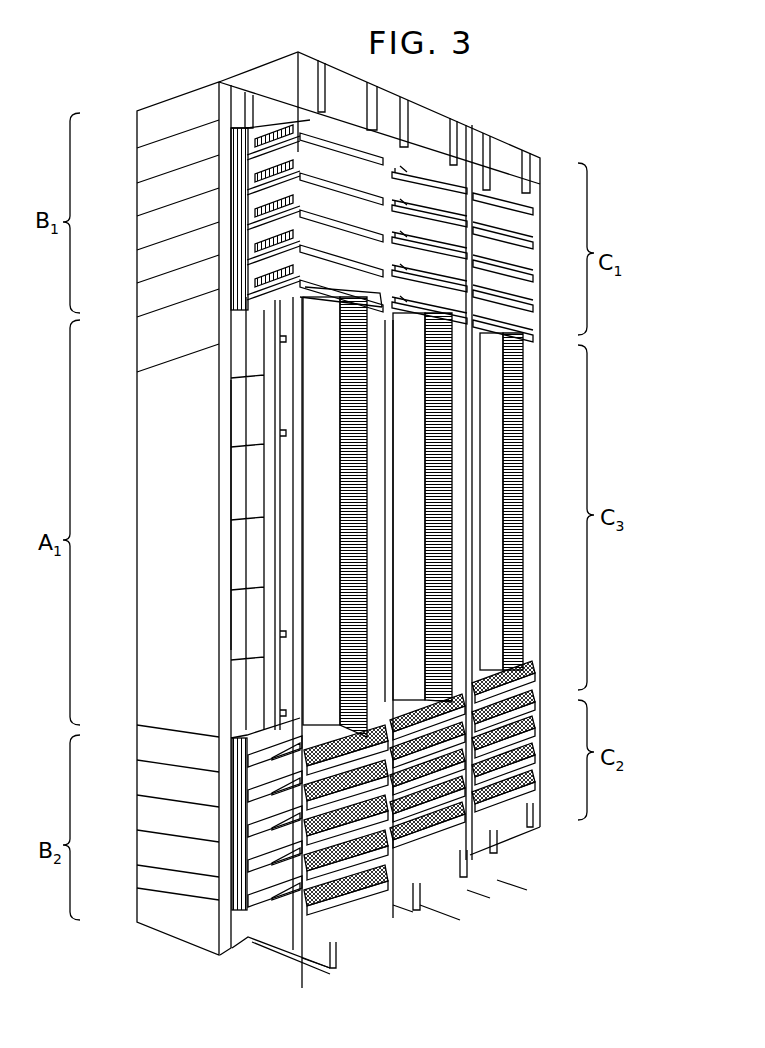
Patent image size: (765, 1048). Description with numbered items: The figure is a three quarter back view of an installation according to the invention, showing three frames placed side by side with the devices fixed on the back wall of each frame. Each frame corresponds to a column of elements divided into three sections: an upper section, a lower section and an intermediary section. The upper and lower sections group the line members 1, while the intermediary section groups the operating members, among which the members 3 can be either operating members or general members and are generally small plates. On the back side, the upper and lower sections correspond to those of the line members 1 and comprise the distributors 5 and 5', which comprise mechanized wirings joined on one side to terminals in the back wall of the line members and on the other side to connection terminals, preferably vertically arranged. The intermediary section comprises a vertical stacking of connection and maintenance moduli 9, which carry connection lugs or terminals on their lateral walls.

The line members 1 is at (237, 253).
The operating members 3 is at (252, 540).
The distributors 5 is at (433, 237).
The connection and maintenance moduli 9 is at (508, 433).
The distributors 5' is at (480, 754).